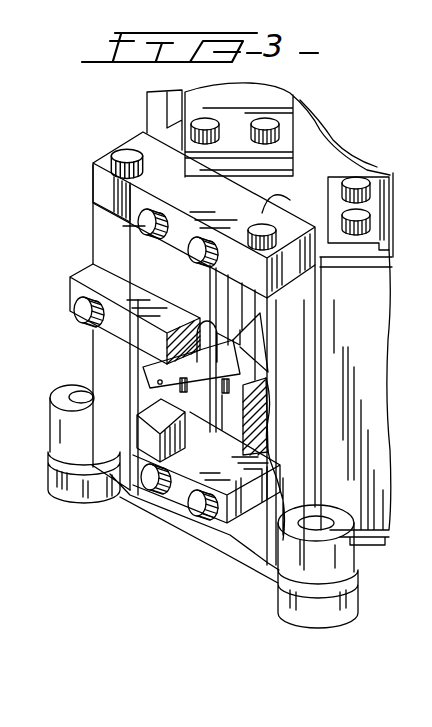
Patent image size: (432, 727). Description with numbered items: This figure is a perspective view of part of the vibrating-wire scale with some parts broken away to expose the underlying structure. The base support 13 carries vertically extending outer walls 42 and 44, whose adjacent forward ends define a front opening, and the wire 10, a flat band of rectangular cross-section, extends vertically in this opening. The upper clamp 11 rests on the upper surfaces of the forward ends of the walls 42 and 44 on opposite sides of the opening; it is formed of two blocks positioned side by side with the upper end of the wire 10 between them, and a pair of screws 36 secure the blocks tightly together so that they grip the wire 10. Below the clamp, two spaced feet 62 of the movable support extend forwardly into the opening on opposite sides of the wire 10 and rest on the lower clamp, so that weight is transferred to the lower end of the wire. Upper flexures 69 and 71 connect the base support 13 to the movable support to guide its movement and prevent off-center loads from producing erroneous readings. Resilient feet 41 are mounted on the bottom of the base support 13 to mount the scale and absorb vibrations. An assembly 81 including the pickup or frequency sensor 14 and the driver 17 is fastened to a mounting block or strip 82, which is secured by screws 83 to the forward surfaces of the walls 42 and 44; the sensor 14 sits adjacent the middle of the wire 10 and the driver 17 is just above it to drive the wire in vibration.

The wire 10 is at (207, 292).
The upper clamp 11 is at (90, 164).
The base support 13 is at (145, 92).
The pickup or frequency sensor 14 is at (237, 339).
The driver 17 is at (203, 348).
The screws 36 is at (122, 156).
The resilient feet 41 is at (88, 500).
The outer wall 42 is at (380, 341).
The outer wall 44 is at (107, 232).
The feet 62 is at (147, 433).
The upper flexure 69 is at (273, 95).
The upper flexure 71 is at (390, 185).
The assembly 81 is at (124, 365).
The mounting block or strip 82 is at (80, 277).
The screws 83 is at (72, 312).